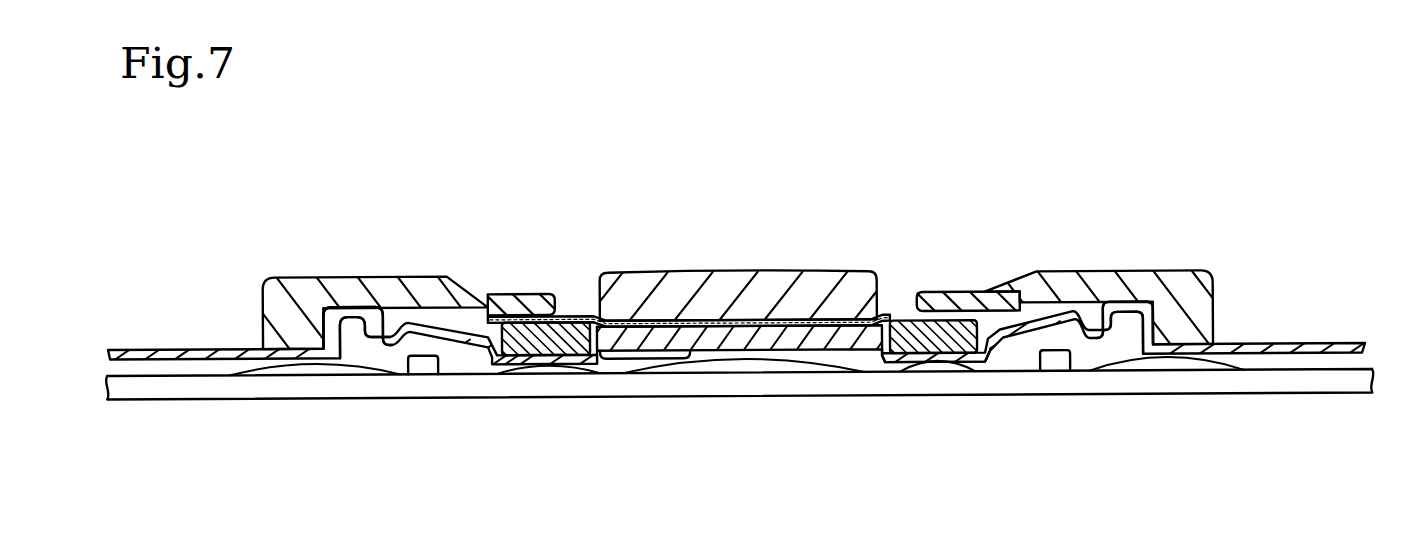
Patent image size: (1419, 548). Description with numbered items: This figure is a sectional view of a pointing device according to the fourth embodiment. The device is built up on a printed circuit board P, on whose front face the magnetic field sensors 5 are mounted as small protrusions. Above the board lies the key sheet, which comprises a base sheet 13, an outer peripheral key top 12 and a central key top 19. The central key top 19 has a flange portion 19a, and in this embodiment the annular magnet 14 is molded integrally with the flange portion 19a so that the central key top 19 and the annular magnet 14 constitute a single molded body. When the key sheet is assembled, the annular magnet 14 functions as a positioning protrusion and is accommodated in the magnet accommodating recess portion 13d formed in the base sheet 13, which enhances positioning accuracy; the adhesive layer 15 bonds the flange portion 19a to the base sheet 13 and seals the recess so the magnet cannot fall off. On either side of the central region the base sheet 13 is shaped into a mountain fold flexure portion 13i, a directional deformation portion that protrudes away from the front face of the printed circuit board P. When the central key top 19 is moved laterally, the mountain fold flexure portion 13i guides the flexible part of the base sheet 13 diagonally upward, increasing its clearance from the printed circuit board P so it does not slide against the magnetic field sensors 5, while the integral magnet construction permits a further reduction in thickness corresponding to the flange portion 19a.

The magnetic field sensor 5 is at (439, 373).
The outer peripheral key top 12 is at (1140, 272).
The base sheet 13 is at (1262, 346).
The mountain fold flexure portion 13i is at (397, 306).
The magnet accommodating recess portion 13d is at (961, 357).
The annular magnet 14 is at (914, 364).
The adhesive layer 15 is at (661, 317).
The central key top 19 is at (822, 270).
The flange portion 19a is at (488, 294).
The printed circuit board P is at (1283, 398).